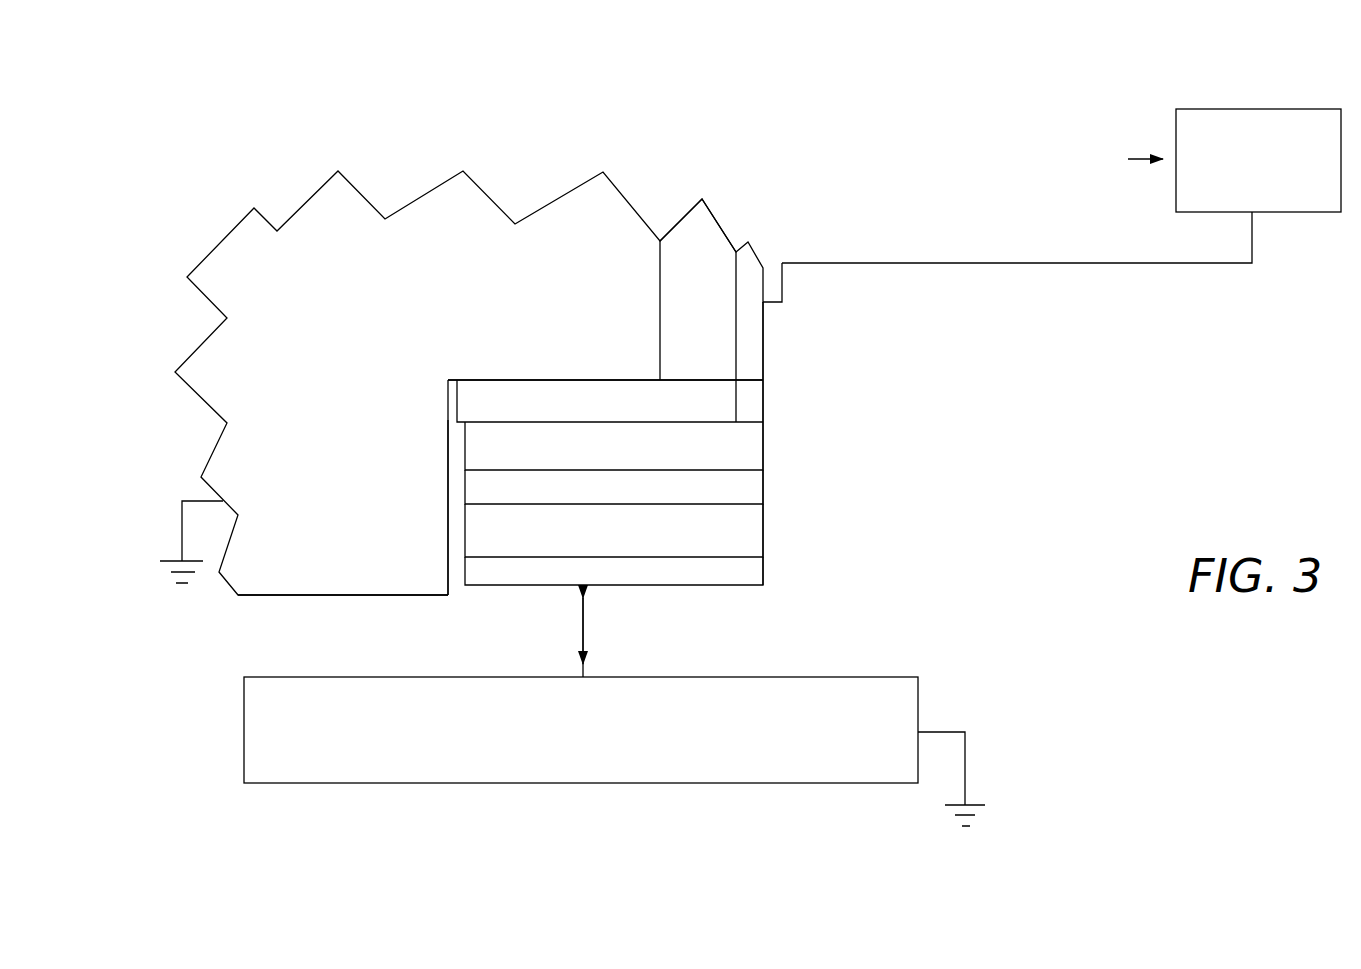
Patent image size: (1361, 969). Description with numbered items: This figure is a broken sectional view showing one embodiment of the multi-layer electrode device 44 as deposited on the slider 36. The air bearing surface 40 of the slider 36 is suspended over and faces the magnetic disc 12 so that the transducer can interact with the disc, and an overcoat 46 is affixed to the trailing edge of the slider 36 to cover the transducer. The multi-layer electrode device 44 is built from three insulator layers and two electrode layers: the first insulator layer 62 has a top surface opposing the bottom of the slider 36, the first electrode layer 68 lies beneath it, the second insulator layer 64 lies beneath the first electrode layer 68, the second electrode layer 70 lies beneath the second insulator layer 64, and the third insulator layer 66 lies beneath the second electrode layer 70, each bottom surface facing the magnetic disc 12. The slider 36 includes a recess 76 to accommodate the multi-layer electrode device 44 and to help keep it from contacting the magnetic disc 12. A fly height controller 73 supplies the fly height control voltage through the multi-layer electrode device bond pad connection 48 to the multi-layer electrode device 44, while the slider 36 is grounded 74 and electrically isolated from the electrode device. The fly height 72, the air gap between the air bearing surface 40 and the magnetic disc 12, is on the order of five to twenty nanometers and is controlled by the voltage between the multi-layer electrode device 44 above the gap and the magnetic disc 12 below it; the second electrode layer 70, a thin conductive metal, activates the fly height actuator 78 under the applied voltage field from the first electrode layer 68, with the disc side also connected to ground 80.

The magnetic disc 12 is at (541, 746).
The slider 36 is at (441, 309).
The air bearing surface 40 is at (313, 602).
The multi-layer electrode device 44 is at (1066, 456).
The overcoat 46 is at (715, 220).
The multi-layer electrode device bond pad connection 48 is at (763, 367).
The first insulator layer 62 is at (725, 400).
The second insulator layer 64 is at (763, 483).
The third insulator layer 66 is at (763, 568).
The first electrode layer 68 is at (763, 447).
The second electrode layer 70 is at (763, 525).
The fly height 72 is at (585, 628).
The fly height controller 73 is at (1244, 172).
The ground 74 is at (157, 590).
The recess 76 is at (460, 608).
The fly height actuator 78 is at (792, 630).
The ground connection of disc 80 is at (998, 818).